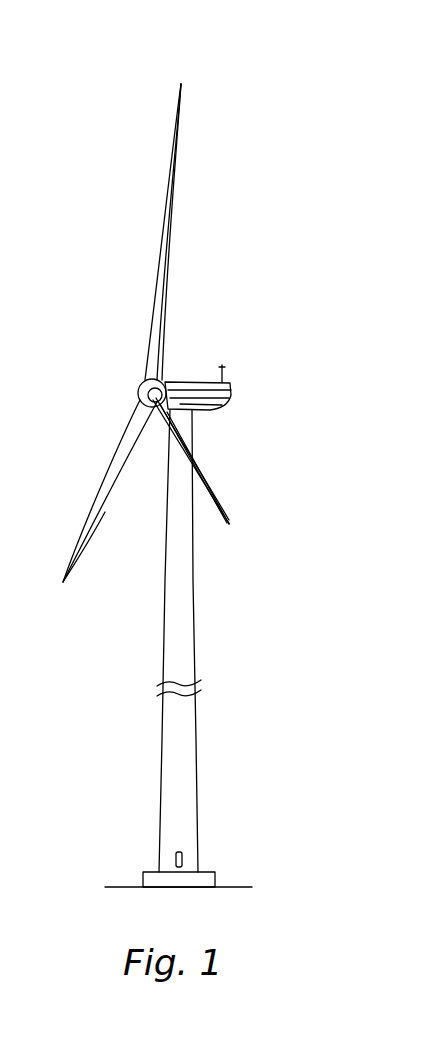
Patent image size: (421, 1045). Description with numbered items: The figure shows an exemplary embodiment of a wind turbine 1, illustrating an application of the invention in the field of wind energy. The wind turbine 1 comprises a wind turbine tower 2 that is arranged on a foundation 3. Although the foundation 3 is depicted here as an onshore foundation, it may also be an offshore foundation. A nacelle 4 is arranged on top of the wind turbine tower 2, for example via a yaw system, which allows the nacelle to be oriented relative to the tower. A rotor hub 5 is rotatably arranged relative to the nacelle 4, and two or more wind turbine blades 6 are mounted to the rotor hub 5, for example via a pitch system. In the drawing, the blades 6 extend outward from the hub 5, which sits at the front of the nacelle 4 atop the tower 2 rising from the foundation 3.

The wind turbine 1 is at (289, 386).
The wind turbine tower 2 is at (185, 641).
The foundation 3 is at (212, 881).
The nacelle 4 is at (195, 386).
The rotor hub 5 is at (137, 391).
The wind turbine blades 6 is at (162, 262).